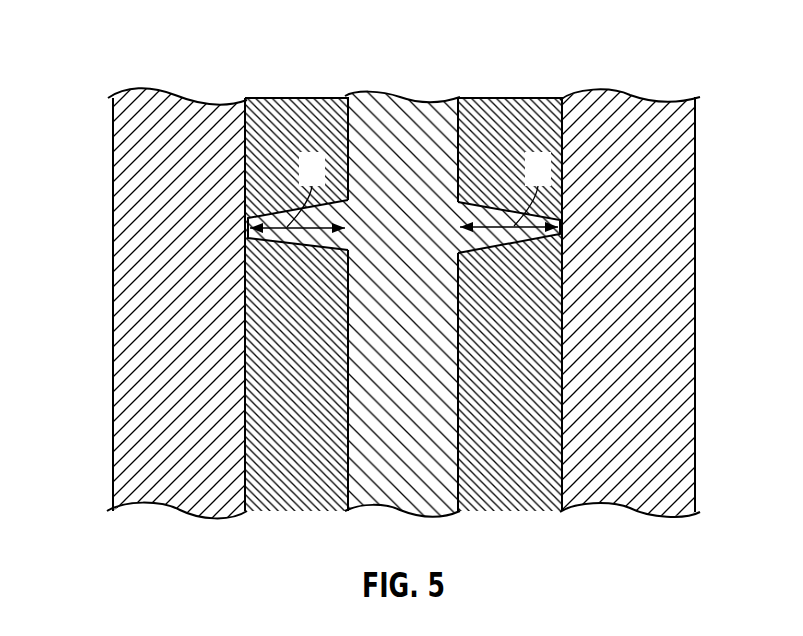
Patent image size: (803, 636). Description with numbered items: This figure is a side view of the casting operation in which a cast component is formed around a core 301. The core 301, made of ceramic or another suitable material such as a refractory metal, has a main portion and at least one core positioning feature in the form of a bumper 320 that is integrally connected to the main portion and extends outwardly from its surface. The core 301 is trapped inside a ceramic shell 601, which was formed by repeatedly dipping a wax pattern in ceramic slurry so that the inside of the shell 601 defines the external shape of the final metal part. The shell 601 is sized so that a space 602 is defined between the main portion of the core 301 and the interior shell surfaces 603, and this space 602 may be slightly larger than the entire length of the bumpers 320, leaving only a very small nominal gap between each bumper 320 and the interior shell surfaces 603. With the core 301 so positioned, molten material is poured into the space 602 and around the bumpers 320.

The shell 601 is at (117, 111).
The space 602 is at (252, 200).
The interior shell surfaces 603 is at (248, 101).
The core 301 is at (405, 97).
The bumper 320 is at (305, 245).